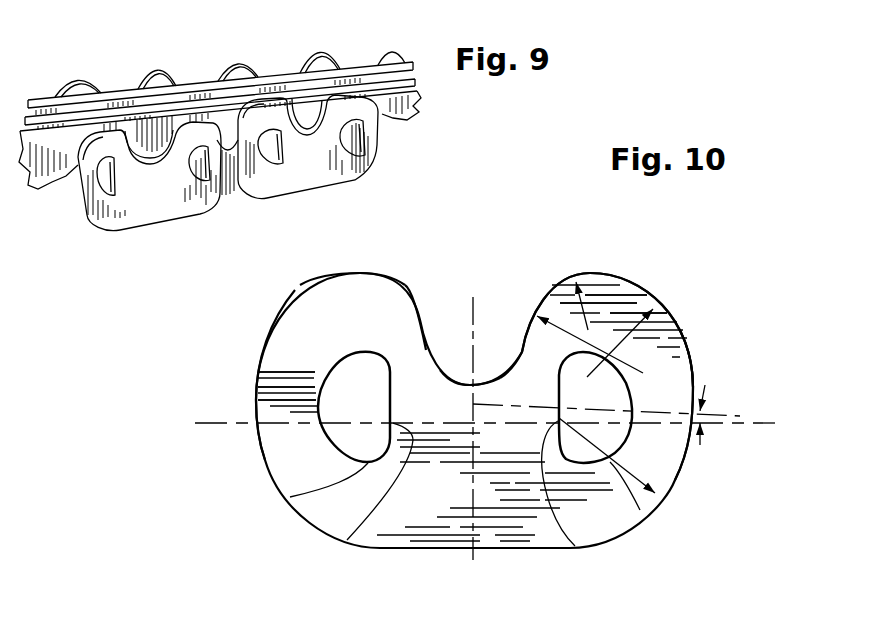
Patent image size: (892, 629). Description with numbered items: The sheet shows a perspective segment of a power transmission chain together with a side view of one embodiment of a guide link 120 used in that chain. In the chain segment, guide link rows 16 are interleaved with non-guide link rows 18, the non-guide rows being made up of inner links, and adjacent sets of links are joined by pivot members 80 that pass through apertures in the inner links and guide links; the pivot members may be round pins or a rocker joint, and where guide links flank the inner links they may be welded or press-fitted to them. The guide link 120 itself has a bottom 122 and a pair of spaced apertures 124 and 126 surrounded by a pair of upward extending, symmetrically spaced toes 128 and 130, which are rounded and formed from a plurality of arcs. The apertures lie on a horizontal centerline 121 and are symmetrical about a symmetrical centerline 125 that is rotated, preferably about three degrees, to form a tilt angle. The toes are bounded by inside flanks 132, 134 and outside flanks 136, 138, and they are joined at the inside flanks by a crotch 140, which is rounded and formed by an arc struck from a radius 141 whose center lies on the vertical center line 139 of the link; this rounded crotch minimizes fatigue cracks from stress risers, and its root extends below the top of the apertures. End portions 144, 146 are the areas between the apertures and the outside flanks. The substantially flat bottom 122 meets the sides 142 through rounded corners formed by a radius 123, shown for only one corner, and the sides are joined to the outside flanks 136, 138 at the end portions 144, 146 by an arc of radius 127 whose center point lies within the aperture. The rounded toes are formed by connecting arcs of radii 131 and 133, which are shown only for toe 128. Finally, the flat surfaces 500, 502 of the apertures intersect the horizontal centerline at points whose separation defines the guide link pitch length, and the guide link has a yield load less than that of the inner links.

In FIG. 9, the guide link rows 16 is at (122, 80).
In FIG. 9, the non-guide link rows 18 is at (360, 43).
In FIG. 9, the pivot members 80 is at (97, 180).
In FIG. 9, the guide link 120 is at (320, 182).
In FIG. 10, the guide link 120 is at (370, 263).
In FIG. 10, the horizontal centerline 121 is at (220, 430).
In FIG. 10, the bottom 122 is at (437, 552).
In FIG. 10, the radius 123 is at (638, 473).
In FIG. 10, the aperture 124 is at (640, 510).
In FIG. 10, the symmetrical centerline 125 is at (737, 420).
In FIG. 10, the aperture 126 is at (290, 497).
In FIG. 10, the radius 127 is at (657, 307).
In FIG. 10, the toe 128 is at (610, 293).
In FIG. 10, the toe 130 is at (332, 297).
In FIG. 10, the radius 131 is at (573, 273).
In FIG. 10, the inside flank 132 is at (540, 313).
In FIG. 10, the radius 133 is at (535, 312).
In FIG. 10, the inside flank 134 is at (427, 356).
In FIG. 10, the outside flank 136 is at (673, 370).
In FIG. 10, the outside flank 138 is at (275, 320).
In FIG. 10, the vertical center line 139 is at (473, 556).
In FIG. 10, the crotch 140 is at (503, 350).
In FIG. 10, the radius 141 is at (455, 374).
In FIG. 10, the sides 142 is at (252, 405).
In FIG. 10, the end portion 144 is at (673, 372).
In FIG. 10, the end portion 146 is at (277, 388).
In FIG. 10, the flat surface of the aperture 500 is at (575, 546).
In FIG. 10, the flat surface of the aperture 502 is at (347, 540).